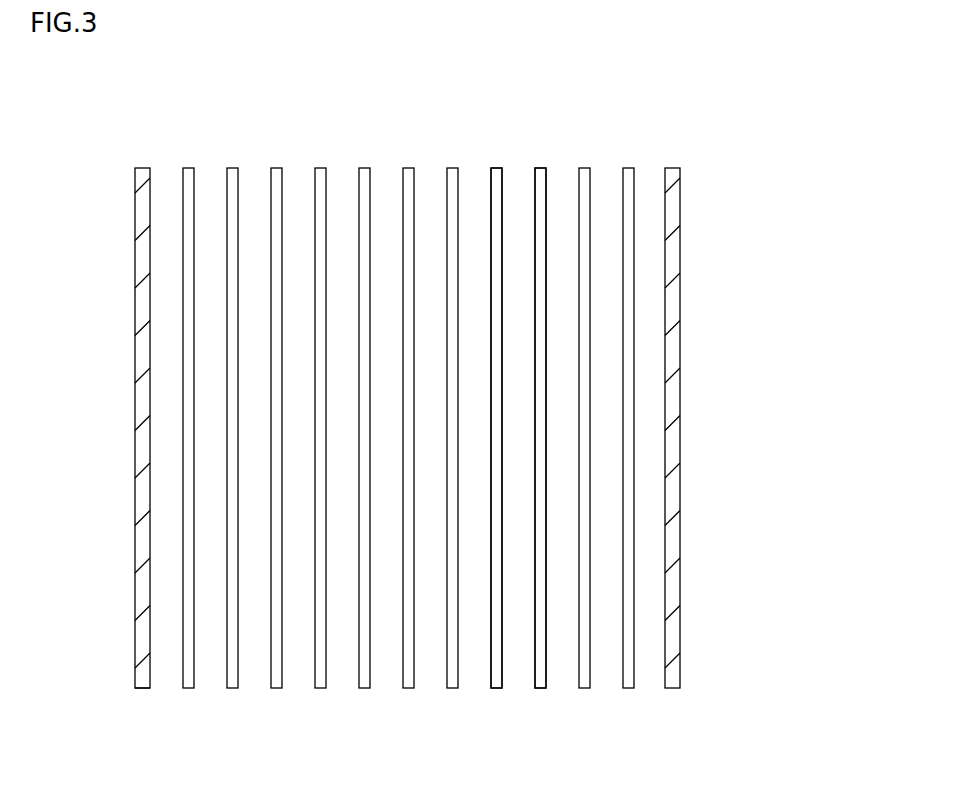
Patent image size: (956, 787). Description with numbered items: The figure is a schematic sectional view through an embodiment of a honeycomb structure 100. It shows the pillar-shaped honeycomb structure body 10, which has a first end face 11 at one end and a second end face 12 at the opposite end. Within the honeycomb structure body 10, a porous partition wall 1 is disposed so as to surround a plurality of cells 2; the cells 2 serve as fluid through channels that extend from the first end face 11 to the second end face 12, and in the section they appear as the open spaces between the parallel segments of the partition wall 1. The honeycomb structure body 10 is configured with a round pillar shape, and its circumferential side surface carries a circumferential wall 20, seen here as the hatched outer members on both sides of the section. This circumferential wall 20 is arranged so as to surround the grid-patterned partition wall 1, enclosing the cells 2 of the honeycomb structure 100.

The honeycomb structure 100 is at (762, 81).
The partition wall 1 is at (579, 195).
The cells 2 is at (512, 227).
The honeycomb structure body 10 is at (687, 178).
The first end face 11 is at (157, 151).
The second end face 12 is at (170, 704).
The circumferential wall 20 is at (143, 318).